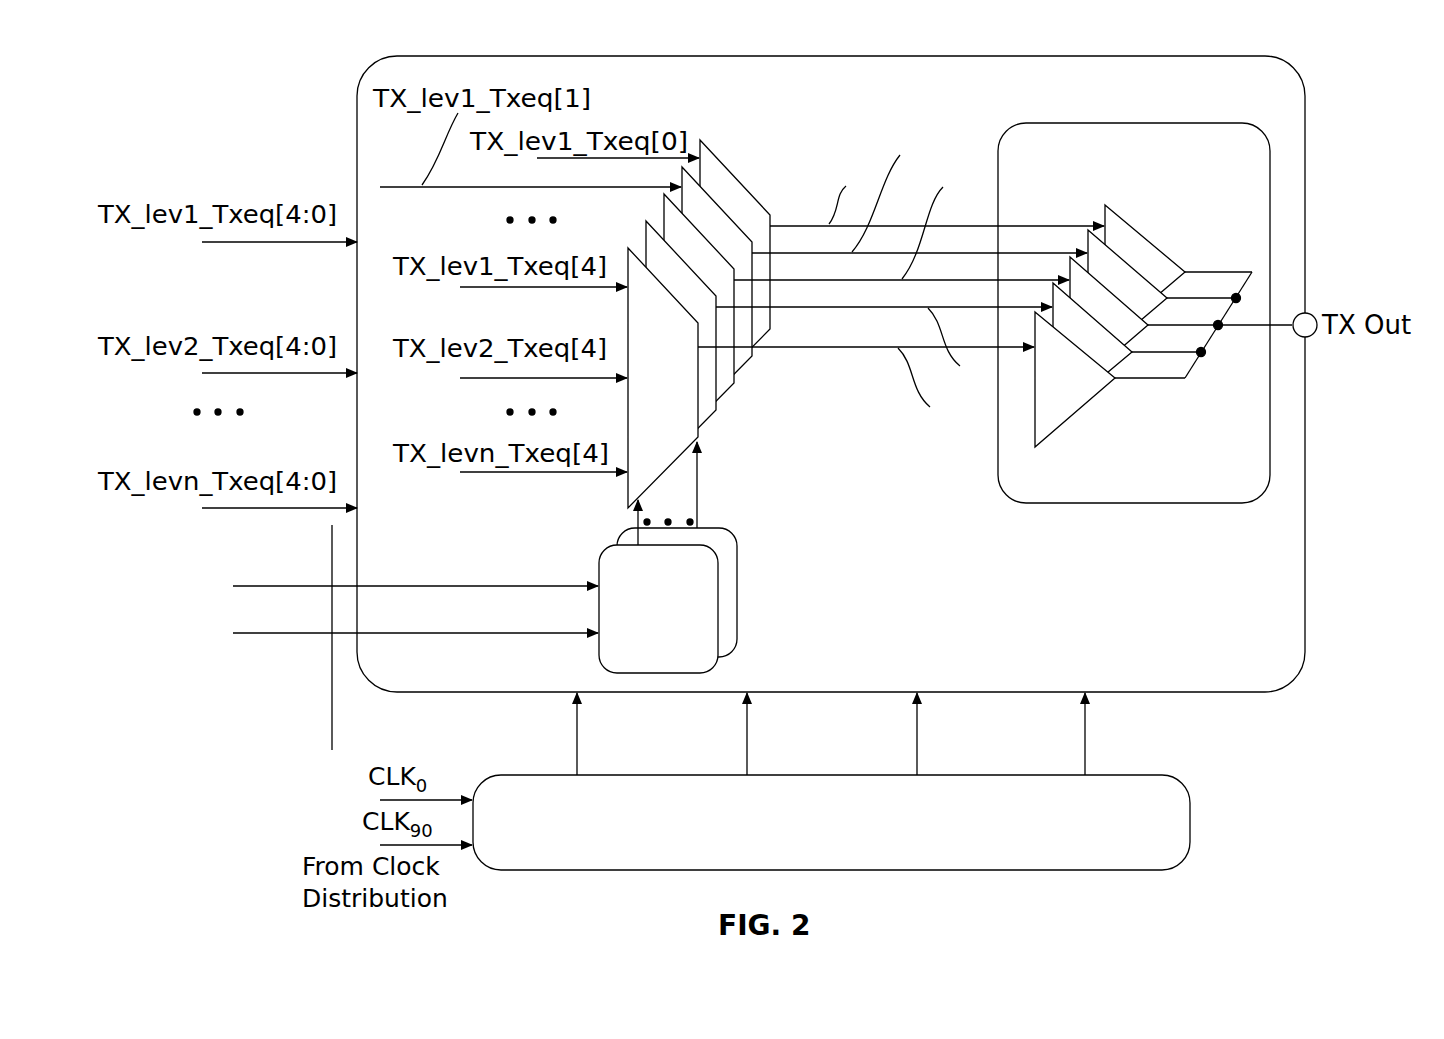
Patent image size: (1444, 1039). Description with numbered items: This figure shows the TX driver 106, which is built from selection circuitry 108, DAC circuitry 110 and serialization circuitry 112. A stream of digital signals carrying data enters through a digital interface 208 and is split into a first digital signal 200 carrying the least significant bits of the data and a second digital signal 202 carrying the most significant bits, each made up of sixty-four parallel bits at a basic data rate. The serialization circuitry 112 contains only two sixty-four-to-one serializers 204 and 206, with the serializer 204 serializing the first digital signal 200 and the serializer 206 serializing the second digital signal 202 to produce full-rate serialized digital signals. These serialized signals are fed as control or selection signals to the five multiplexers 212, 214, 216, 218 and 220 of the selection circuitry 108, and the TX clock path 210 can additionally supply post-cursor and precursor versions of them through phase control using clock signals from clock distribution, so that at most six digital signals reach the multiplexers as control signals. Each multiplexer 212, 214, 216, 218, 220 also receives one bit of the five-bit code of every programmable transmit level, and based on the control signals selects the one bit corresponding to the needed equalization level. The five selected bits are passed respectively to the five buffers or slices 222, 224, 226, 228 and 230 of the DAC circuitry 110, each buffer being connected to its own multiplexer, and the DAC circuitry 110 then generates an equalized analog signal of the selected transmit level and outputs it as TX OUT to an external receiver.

The TX driver 106 is at (416, 52).
The selection circuitry 108 is at (866, 294).
The DAC circuitry 110 is at (1145, 291).
The serialization circuitry 112 is at (604, 530).
The first digital signal 200 is at (178, 560).
The second digital signal 202 is at (178, 609).
The serializer 204 is at (720, 633).
The serializer 206 is at (740, 566).
The digital interface 208 is at (332, 712).
The TX clock path 210 is at (1122, 775).
The multiplexer 212 is at (695, 430).
The multiplexer 214 is at (707, 398).
The multiplexer 216 is at (688, 253).
The multiplexer 218 is at (724, 232).
The multiplexer 220 is at (760, 218).
The buffer 222 is at (1063, 410).
The buffer 224 is at (1068, 312).
The buffer 226 is at (1090, 310).
The buffer 228 is at (1127, 293).
The buffer 230 is at (1170, 273).